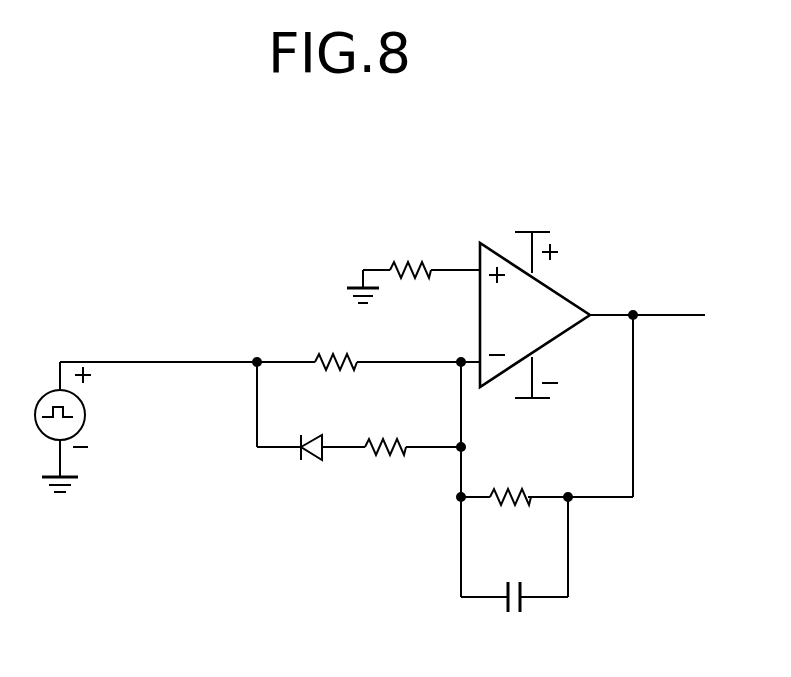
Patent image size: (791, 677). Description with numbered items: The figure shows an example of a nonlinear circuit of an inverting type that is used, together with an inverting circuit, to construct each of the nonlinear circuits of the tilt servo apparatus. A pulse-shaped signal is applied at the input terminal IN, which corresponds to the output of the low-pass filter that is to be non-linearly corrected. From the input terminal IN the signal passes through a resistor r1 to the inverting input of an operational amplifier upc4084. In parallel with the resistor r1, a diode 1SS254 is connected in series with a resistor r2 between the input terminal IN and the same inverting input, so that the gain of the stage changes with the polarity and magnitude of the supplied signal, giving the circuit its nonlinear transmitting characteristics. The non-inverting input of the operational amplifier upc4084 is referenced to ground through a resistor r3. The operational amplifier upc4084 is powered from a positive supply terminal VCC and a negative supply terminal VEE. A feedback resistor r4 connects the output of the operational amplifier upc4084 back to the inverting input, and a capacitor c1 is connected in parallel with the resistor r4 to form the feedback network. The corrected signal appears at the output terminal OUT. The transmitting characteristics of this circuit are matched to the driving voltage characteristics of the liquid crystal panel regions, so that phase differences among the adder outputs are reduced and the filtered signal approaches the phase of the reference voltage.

The input terminal IN is at (146, 412).
The resistor r1 is at (368, 348).
The resistor r2 is at (413, 464).
The resistor r3 is at (413, 267).
The resistor r4 is at (514, 482).
The capacitor c1 is at (514, 572).
The diode 1SS254 is at (324, 432).
The operational amplifier upc4084 is at (569, 315).
The positive supply terminal VCC is at (539, 237).
The negative supply terminal VEE is at (537, 395).
The output terminal OUT is at (630, 393).